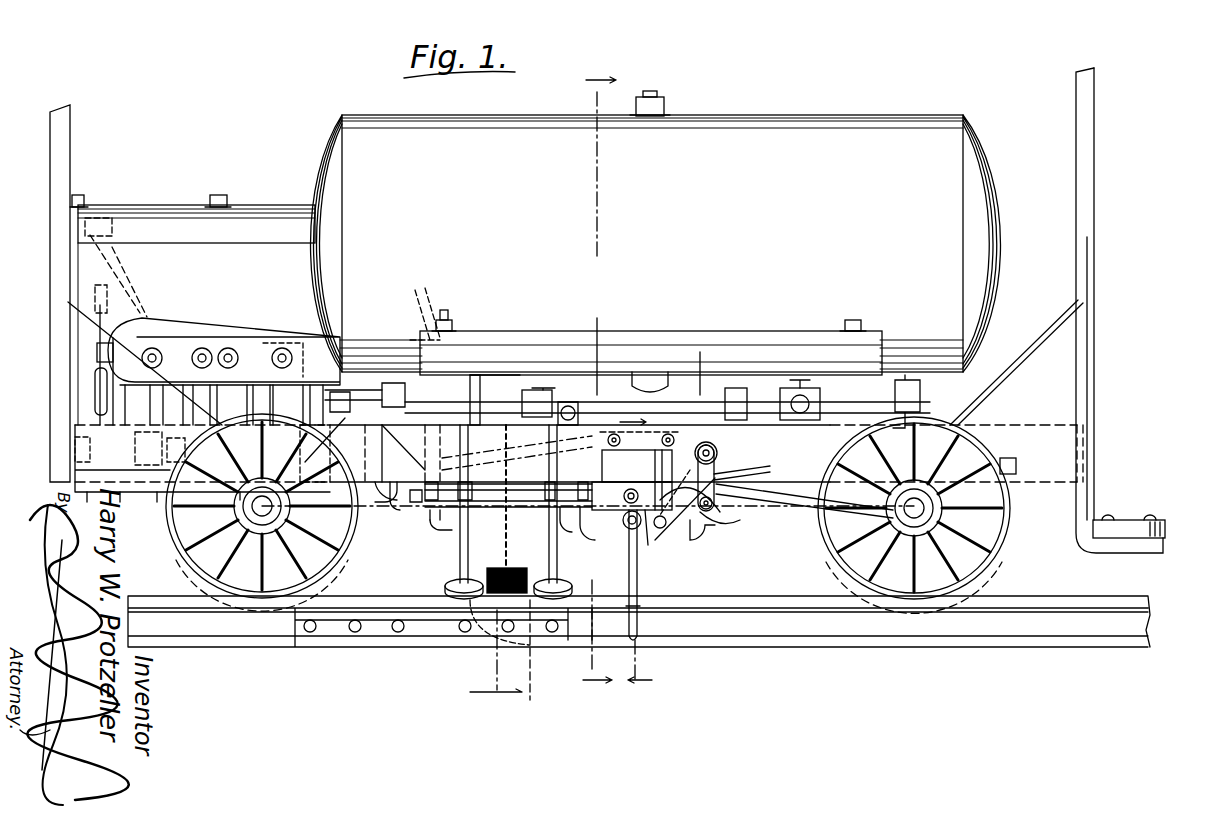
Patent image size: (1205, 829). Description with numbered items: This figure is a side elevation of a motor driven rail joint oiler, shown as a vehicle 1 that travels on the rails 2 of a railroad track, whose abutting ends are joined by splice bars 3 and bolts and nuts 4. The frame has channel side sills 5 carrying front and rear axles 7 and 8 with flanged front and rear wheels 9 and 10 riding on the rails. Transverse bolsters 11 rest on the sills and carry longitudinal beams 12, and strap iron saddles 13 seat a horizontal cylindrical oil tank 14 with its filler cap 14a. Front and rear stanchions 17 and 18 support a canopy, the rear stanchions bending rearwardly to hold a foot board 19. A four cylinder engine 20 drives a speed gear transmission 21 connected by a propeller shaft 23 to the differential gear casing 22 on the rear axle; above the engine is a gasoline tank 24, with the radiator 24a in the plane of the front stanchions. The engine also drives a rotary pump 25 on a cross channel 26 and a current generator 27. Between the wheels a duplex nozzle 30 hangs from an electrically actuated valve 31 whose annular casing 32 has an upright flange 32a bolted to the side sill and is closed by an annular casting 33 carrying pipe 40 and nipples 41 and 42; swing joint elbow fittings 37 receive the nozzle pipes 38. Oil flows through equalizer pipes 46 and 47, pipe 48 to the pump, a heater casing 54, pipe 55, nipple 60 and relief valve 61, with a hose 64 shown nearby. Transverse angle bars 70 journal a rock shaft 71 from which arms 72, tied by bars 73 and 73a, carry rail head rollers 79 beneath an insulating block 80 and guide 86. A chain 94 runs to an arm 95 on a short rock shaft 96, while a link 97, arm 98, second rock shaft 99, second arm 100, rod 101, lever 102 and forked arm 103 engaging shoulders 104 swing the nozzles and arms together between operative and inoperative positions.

The vehicle 1 is at (1106, 412).
The rails 2 is at (1040, 598).
The splice bars 3 is at (289, 670).
The bolts and nuts 4 is at (398, 620).
The side sills 5 is at (1040, 482).
The front axle 7 is at (246, 521).
The rear axle 8 is at (897, 523).
The front wheels 9 is at (262, 512).
The rear wheels 10 is at (826, 562).
The bolsters 11 is at (518, 392).
The longitudinally extending beams 12 is at (795, 350).
The strap iron saddles 13 is at (487, 333).
The tank 14 is at (941, 116).
The filler cap 14a is at (668, 88).
The front stanchions 17 is at (52, 156).
The rear stanchions 18 is at (1095, 278).
The foot board 19 is at (1140, 521).
The internal combustion engine 20 is at (256, 330).
The speed gear transmission 21 is at (352, 516).
The differential gear casing 22 is at (978, 566).
The propeller shaft 23 is at (794, 503).
The gasoline tank 24 is at (172, 207).
The radiator 24a is at (86, 207).
The rotary pump 25 is at (162, 528).
The cross channel 26 is at (132, 490).
The current generator 27 is at (188, 332).
The duplex nozzle 30 is at (642, 612).
The electrically actuated valve 31 is at (705, 530).
The annular casing 32 is at (718, 556).
The upright flange 32a is at (656, 438).
The annular casting 33 is at (720, 562).
The swing joint elbow fitting 37 is at (636, 556).
The nozzle pipes 38 is at (676, 562).
The pipe 40 is at (698, 460).
The inlet nipple 41 is at (628, 522).
The nipple 42 is at (664, 524).
The front equalizer pipe 46 is at (402, 453).
The rear equalizer pipe 47 is at (921, 397).
The pipe 48 is at (374, 500).
The heater casing 54 is at (210, 334).
The pipe 55 is at (317, 450).
The nipple 60 is at (806, 420).
The pressure regulating relief valve 61 is at (760, 420).
The hose 64 is at (380, 336).
The transverse angle bars 70 is at (432, 516).
The rock shaft 71 is at (420, 537).
The arms 72 is at (436, 542).
The bar 73 is at (445, 515).
The bar 73a is at (426, 536).
The rail head engaging roller 79 is at (460, 598).
The insulating block 80 is at (496, 597).
The guide 86 is at (508, 658).
The chain 94 is at (470, 522).
The arm 95 is at (545, 388).
The short transverse rock shaft 96 is at (570, 400).
The link 97 is at (690, 546).
The arm 98 is at (740, 472).
The second rock shaft 99 is at (720, 453).
The second arm 100 is at (760, 358).
The rod 101 is at (702, 352).
The lever 102 is at (450, 323).
The arm 103 is at (618, 337).
The shoulders 104 is at (508, 530).